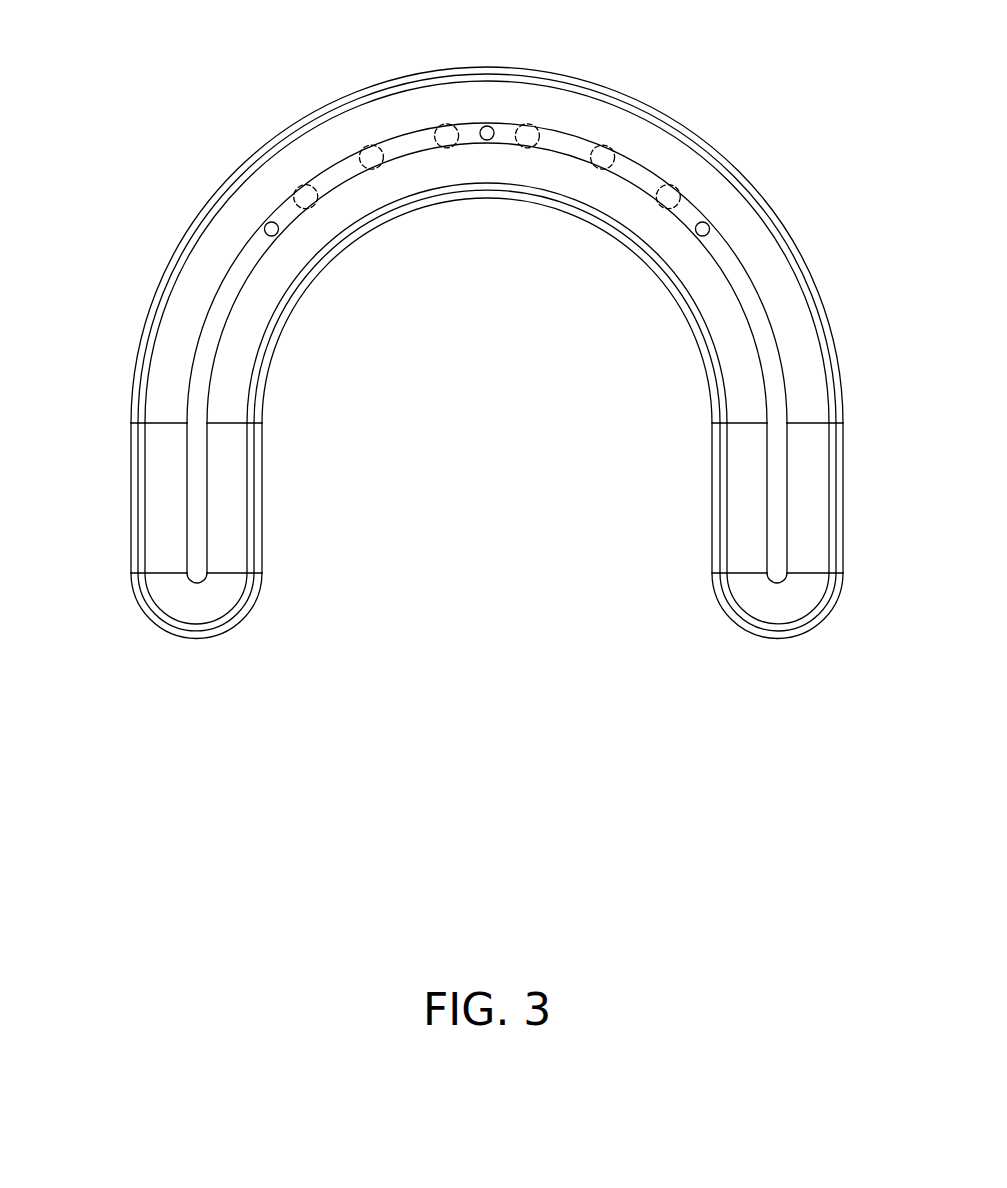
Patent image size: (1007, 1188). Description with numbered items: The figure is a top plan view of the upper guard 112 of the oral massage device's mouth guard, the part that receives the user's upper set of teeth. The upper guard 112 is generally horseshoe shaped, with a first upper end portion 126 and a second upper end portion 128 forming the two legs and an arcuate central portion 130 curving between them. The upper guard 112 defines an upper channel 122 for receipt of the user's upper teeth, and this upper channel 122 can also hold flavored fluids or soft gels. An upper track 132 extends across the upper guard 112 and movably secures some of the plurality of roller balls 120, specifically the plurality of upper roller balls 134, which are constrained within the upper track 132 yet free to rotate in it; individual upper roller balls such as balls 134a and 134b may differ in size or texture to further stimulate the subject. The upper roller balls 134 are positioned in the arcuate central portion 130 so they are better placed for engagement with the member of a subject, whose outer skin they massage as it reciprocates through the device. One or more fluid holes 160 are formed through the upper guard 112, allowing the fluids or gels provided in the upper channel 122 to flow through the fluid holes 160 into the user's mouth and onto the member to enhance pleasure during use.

The upper guard 112 is at (238, 152).
The plurality of roller balls 120 is at (708, 95).
The upper channel 122 is at (162, 390).
The first upper end portion 126 is at (843, 480).
The second upper end portion 128 is at (132, 478).
The arcuate central portion 130 is at (519, 66).
The upper track 132 is at (727, 258).
The plurality of upper roller balls 134 is at (365, 140).
The first sensor 134a is at (606, 143).
The second sensor 134b is at (679, 180).
The fluid holes 160 is at (486, 126).